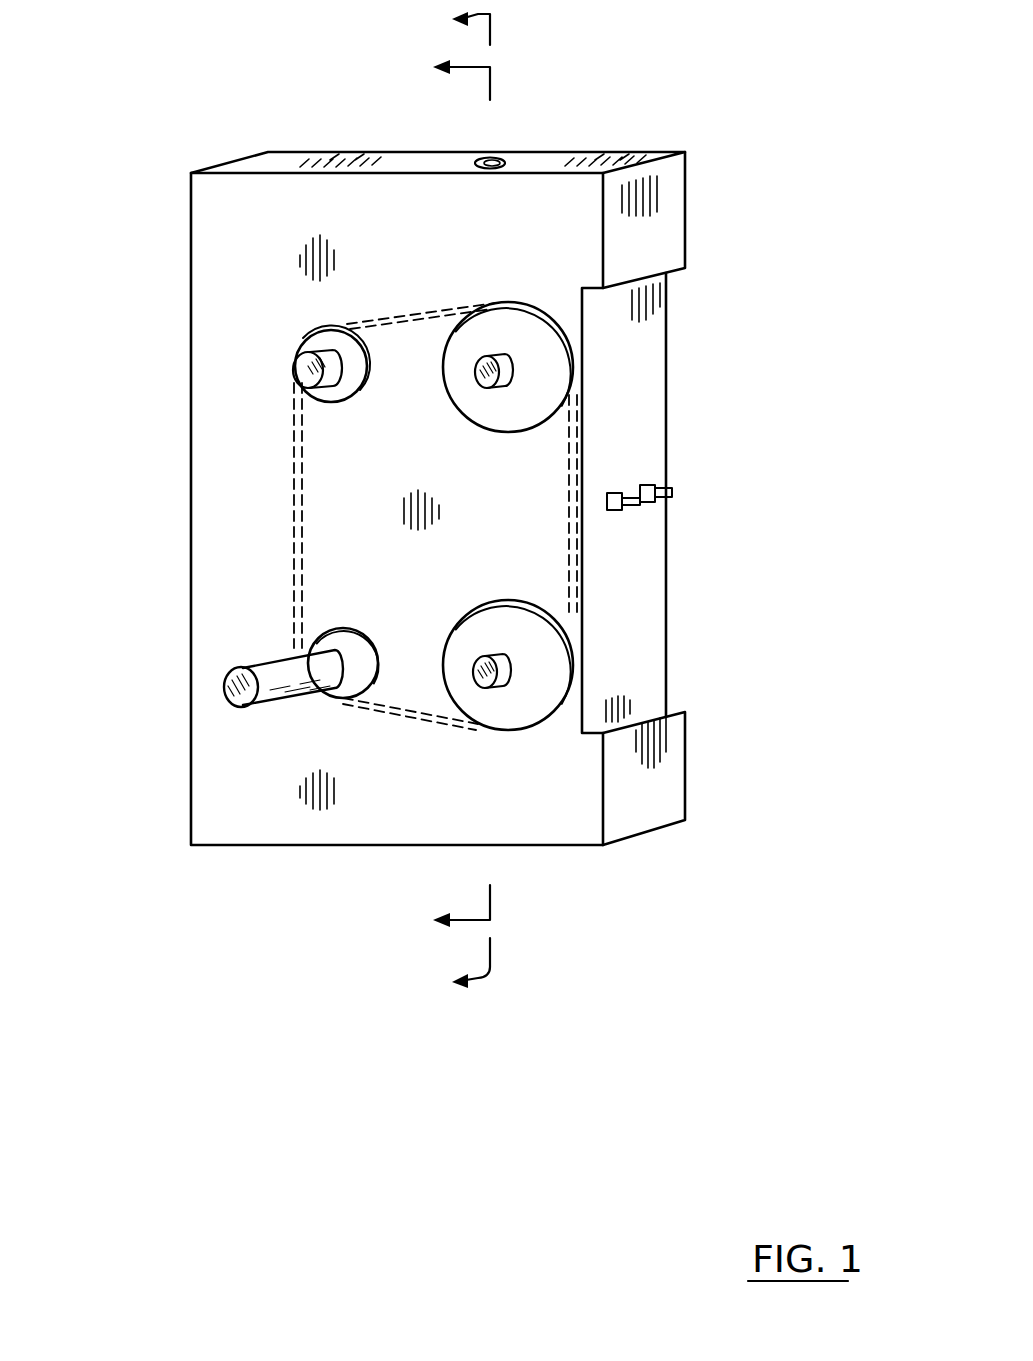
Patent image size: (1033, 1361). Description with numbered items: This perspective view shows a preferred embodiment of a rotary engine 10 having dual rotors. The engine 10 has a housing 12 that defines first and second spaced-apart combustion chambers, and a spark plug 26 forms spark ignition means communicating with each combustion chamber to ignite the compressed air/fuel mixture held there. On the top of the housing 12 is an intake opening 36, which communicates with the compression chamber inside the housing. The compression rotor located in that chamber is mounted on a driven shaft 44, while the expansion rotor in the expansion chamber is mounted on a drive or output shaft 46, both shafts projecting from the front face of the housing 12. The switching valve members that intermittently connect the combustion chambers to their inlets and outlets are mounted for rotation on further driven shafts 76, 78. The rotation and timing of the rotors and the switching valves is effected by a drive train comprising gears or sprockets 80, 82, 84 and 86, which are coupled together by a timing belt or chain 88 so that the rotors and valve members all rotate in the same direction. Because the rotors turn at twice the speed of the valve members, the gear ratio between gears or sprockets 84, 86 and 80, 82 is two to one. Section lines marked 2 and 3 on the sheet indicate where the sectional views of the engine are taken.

The rotary engine 10 is at (271, 72).
The housing 12 is at (686, 222).
The intake opening 36 is at (490, 165).
The gear or sprocket 80 is at (332, 341).
The driven shaft 44 is at (307, 372).
The timing belt or chain 88 is at (292, 455).
The gear or sprocket 86 is at (523, 342).
The driven shaft 76 is at (508, 362).
The drive or output shaft 46 is at (268, 672).
The gear or sprocket 82 is at (335, 688).
The gear or sprocket 84 is at (545, 685).
The driven shaft 78 is at (505, 658).
The spark plug 26 is at (648, 487).
The section line 2 is at (450, 493).
The section line 3 is at (460, 505).